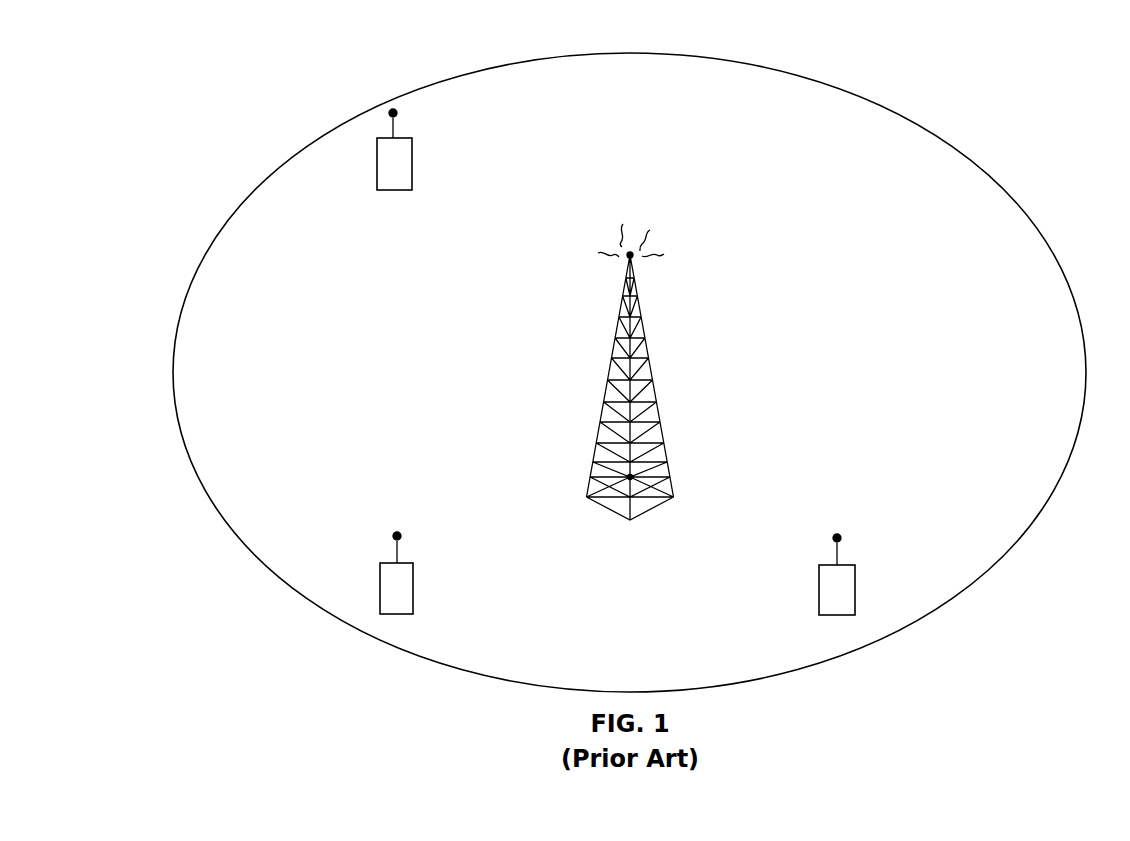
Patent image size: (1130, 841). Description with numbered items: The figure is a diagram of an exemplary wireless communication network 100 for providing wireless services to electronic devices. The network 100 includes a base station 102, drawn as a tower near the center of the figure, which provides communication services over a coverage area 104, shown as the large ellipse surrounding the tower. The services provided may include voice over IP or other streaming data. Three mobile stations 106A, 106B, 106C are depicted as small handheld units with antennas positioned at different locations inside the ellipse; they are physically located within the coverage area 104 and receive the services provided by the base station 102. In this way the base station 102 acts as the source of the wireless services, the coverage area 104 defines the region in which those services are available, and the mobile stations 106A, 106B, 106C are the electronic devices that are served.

The wireless communication network 100 is at (1093, 66).
The base station 102 is at (676, 400).
The coverage area 104 is at (1013, 203).
The mobile station 106A is at (423, 590).
The mobile station 106B is at (863, 590).
The mobile station 106C is at (420, 167).